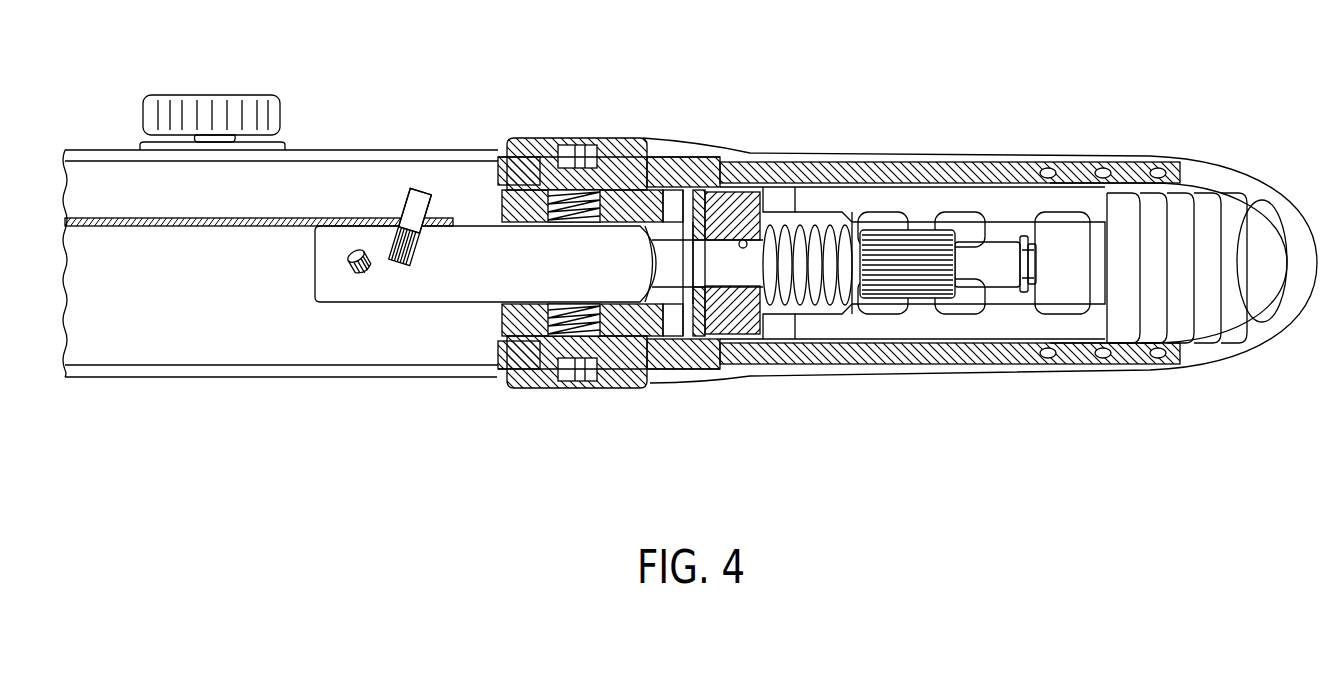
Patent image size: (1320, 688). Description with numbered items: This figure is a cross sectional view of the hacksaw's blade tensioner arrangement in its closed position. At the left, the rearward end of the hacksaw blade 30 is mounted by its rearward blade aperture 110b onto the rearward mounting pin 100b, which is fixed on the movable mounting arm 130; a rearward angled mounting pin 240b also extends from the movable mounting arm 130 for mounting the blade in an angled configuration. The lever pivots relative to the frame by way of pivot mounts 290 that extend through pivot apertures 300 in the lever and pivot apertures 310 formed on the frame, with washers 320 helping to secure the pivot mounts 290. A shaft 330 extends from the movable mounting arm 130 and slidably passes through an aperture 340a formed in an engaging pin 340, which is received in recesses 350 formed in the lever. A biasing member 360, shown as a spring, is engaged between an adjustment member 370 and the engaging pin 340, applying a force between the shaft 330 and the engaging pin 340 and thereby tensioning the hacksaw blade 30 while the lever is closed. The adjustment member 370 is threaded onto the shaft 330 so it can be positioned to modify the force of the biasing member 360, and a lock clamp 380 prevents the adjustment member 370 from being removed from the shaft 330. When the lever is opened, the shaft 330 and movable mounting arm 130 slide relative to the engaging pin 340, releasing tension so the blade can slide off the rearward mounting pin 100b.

The hacksaw blade 30 is at (285, 217).
The rearward mounting pin 100b is at (422, 200).
The rearward blade aperture 110b is at (398, 215).
The movable mounting arm 130 is at (440, 278).
The rearward angled mounting pin 240b is at (362, 280).
The pivot mount 290 is at (545, 136).
The pivot aperture 300 is at (698, 205).
The pivot aperture 310 is at (632, 200).
The washer 320 is at (640, 134).
The shaft 330 is at (1000, 250).
The engaging pin 340 is at (733, 202).
The aperture 340a is at (763, 217).
The recess 350 is at (688, 177).
The biasing member 360 is at (830, 230).
The adjustment member 370 is at (920, 245).
The lock clamp 380 is at (1032, 292).